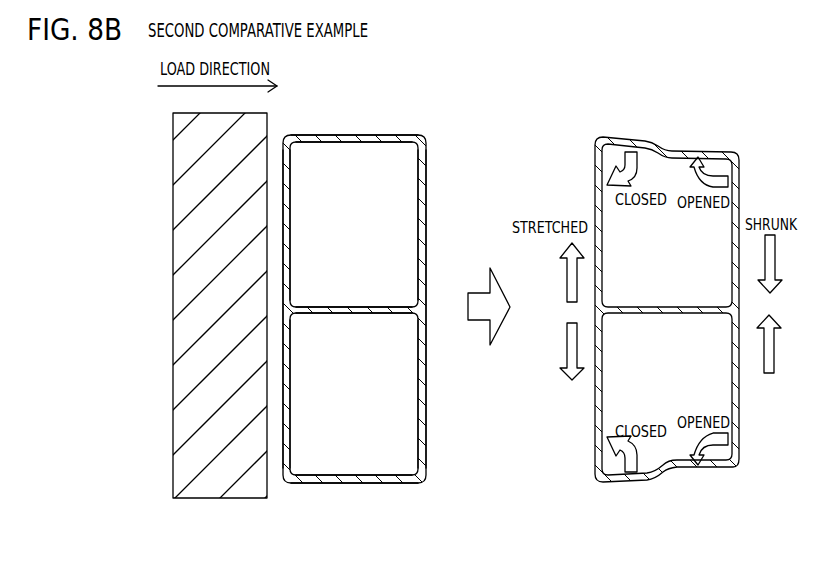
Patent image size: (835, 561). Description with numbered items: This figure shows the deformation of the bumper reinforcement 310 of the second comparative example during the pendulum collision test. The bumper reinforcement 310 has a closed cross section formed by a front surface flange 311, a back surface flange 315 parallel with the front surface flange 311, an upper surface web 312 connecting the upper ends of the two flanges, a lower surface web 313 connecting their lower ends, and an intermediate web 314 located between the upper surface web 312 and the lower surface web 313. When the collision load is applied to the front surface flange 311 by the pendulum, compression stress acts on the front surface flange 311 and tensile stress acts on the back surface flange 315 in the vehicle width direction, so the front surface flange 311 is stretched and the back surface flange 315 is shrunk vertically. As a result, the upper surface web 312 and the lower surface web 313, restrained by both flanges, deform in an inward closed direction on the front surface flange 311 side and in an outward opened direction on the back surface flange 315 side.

The bumper reinforcement 310 is at (424, 116).
The front surface flange 311 is at (286, 442).
The upper surface web 312 is at (362, 137).
The lower surface web 313 is at (350, 484).
The intermediate web 314 is at (351, 306).
The back surface flange 315 is at (427, 255).